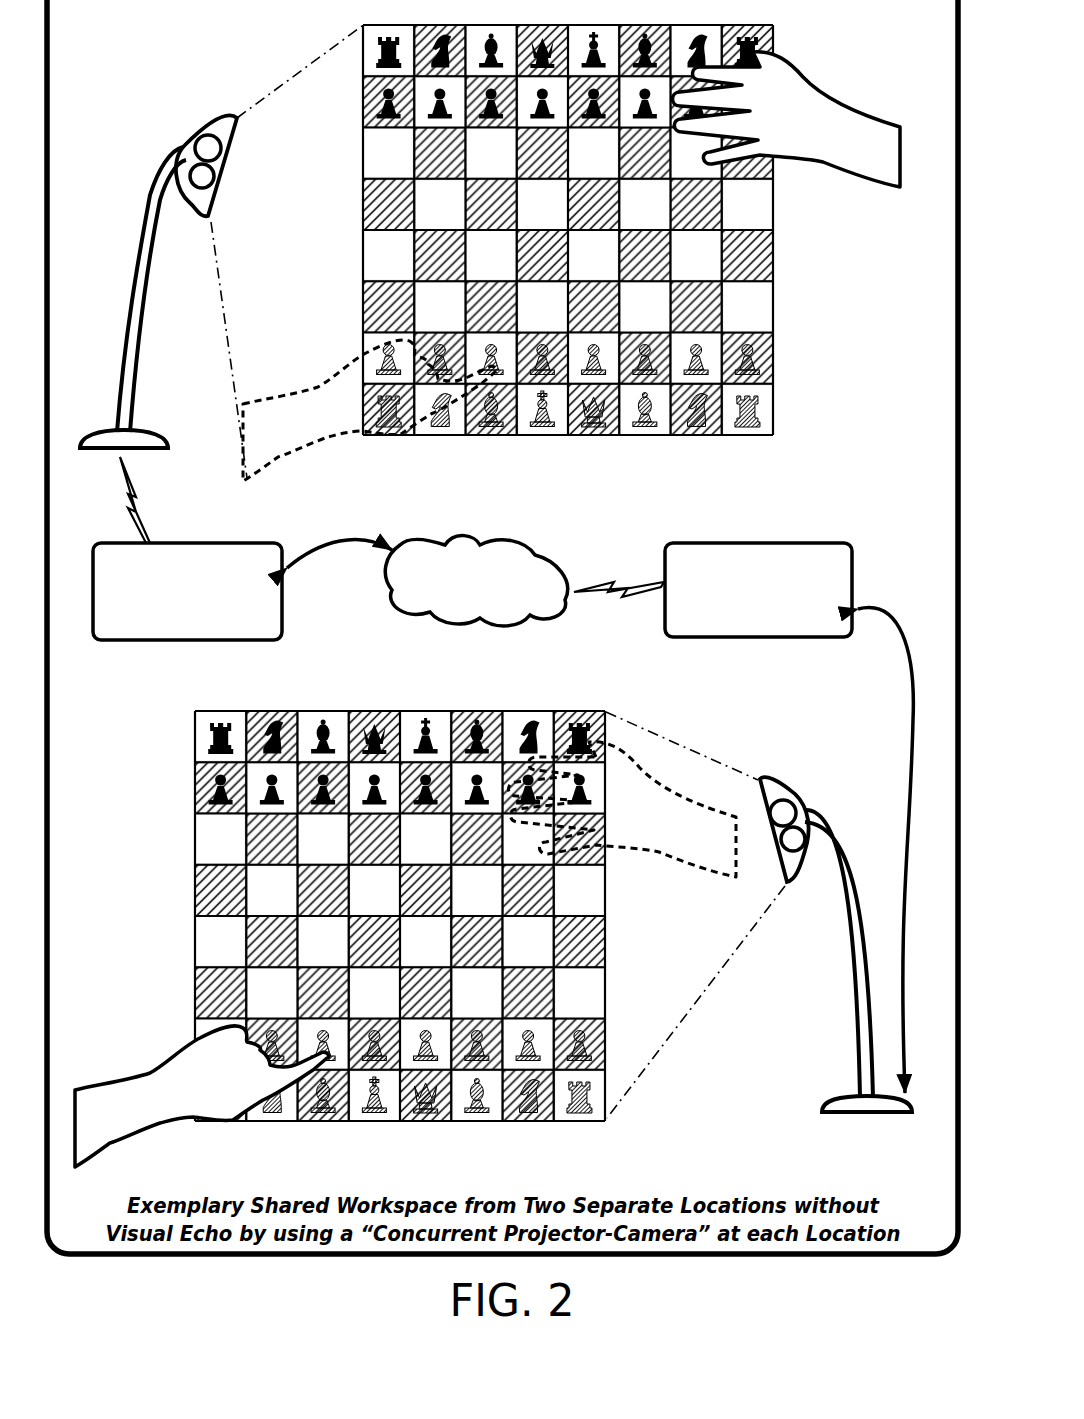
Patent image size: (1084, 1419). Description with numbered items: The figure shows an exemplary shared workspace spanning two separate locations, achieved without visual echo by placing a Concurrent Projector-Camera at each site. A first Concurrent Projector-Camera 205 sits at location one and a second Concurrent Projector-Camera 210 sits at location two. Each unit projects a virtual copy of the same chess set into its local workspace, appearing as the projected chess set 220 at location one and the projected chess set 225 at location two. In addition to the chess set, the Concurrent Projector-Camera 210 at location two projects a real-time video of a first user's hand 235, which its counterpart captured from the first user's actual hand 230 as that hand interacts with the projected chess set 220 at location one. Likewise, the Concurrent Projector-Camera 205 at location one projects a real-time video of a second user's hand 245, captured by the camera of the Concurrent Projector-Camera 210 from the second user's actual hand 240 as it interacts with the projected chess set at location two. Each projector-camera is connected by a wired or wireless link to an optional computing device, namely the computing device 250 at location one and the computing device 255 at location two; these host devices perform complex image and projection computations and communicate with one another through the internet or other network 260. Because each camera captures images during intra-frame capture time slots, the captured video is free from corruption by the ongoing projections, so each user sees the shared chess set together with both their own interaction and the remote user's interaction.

The Concurrent Projector-Camera 205 is at (793, 893).
The Concurrent Projector-Camera 210 is at (207, 112).
The projected chess set 220 is at (312, 1125).
The projected chess set 225 is at (549, 441).
The first user's actual hand 230 is at (128, 1068).
The first user's hand (projected) 235 is at (289, 469).
The second user's actual hand 240 is at (851, 191).
The second user's hand (projected) 245 is at (689, 863).
The computing device 250 is at (765, 646).
The computing device 255 is at (150, 649).
The network 260 is at (479, 536).